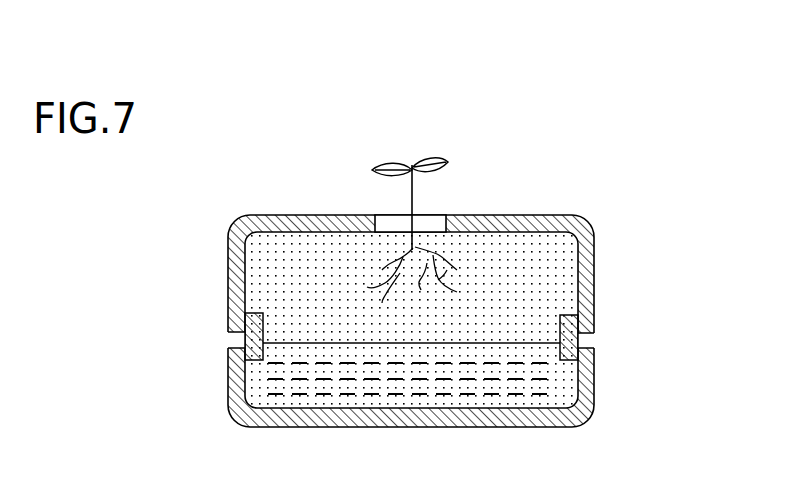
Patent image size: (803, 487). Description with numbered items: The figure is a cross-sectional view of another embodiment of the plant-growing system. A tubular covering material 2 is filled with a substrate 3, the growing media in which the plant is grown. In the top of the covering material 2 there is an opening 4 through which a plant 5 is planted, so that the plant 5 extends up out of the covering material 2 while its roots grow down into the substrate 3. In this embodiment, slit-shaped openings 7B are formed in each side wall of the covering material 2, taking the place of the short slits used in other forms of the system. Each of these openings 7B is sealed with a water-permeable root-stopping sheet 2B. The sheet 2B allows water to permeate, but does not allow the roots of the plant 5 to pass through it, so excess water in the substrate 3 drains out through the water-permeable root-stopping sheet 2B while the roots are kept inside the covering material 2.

The covering material 2 is at (595, 242).
The water-permeable root-stopping sheet 2B is at (579, 331).
The slit-shaped opening 7B is at (587, 342).
The substrate 3 is at (502, 397).
The opening 4 is at (437, 215).
The plant 5 is at (394, 162).